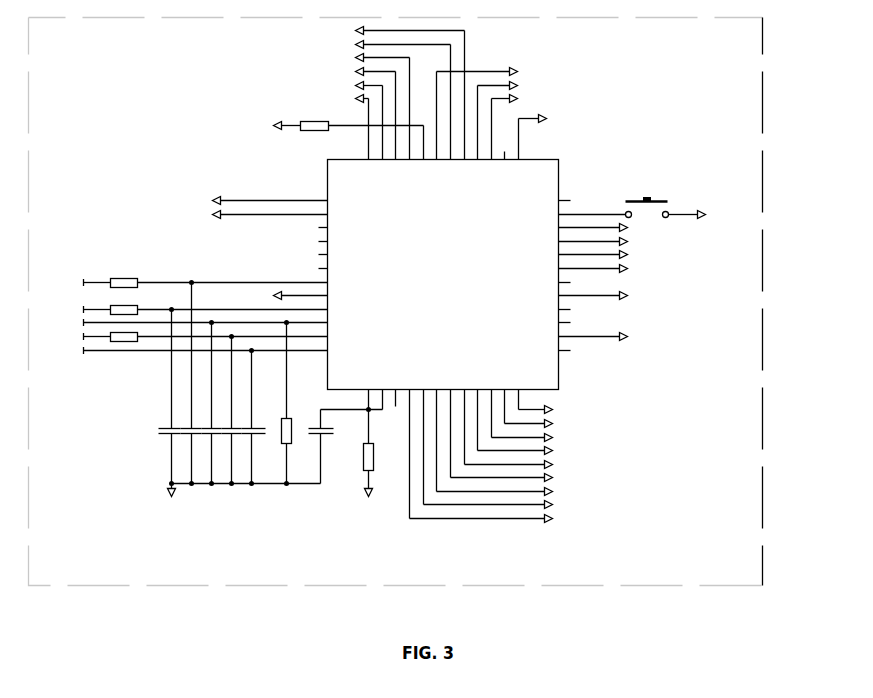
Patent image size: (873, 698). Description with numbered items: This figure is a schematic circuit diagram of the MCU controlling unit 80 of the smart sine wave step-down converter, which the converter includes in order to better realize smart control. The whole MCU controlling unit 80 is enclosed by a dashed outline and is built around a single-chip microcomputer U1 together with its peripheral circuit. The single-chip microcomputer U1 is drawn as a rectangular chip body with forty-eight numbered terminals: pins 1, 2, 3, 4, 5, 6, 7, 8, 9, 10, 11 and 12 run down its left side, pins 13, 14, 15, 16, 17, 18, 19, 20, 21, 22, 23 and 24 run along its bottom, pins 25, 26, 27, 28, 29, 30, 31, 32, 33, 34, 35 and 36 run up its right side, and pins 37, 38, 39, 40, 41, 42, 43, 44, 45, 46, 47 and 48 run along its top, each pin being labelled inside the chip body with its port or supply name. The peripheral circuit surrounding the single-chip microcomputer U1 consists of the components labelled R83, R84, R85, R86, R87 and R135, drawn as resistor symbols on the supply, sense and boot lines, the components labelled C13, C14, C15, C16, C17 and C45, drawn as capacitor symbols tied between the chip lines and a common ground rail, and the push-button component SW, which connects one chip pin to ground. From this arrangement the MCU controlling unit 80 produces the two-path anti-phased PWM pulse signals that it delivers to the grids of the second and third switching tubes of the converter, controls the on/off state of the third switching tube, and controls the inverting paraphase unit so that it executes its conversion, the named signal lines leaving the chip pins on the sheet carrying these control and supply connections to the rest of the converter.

The MCU controlling unit 80 is at (708, 140).
The single-chip microcomputer U1 is at (358, 274).
The resistor R83 is at (116, 278).
The resistor R84 is at (116, 305).
The resistor R85 is at (116, 332).
The resistor R86 is at (287, 403).
The resistor R87 is at (370, 453).
The resistor R135 is at (349, 119).
The capacitor C13 is at (170, 397).
The capacitor C14 is at (191, 383).
The capacitor C15 is at (212, 403).
The capacitor C16 is at (232, 410).
The capacitor C17 is at (321, 443).
The capacitor C45 is at (254, 417).
The switch SW is at (639, 202).
The microcontroller pin 1 (VDD) 1 is at (270, 197).
The microcontroller pin 2 (PC13) 2 is at (270, 211).
The microcontroller pin 3 is at (319, 222).
The microcontroller pin 4 is at (319, 236).
The microcontroller pin 5 is at (319, 249).
The microcontroller pin 6 is at (319, 263).
The microcontroller pin 7 (NRST) 7 is at (206, 277).
The microcontroller pin 8 (VSSA) 8 is at (301, 292).
The microcontroller pin 9 (VDDA) 9 is at (206, 304).
The microcontroller pin 10 (PA0) 10 is at (206, 317).
The microcontroller pin 11 (PA1) 11 is at (206, 331).
The microcontroller pin 12 (PA2) 12 is at (206, 345).
The microcontroller pin 13 is at (362, 401).
The microcontroller pin 14 is at (376, 401).
The microcontroller pin 15 is at (389, 401).
The microcontroller pin 16 is at (474, 456).
The microcontroller pin 17 is at (481, 449).
The microcontroller pin 18 is at (488, 443).
The microcontroller pin 19 is at (495, 436).
The microcontroller pin 20 is at (502, 429).
The microcontroller pin 21 is at (508, 422).
The microcontroller pin 22 is at (515, 416).
The microcontroller pin 23 (VSS) 23 is at (522, 409).
The microcontroller pin 24 (VDD) 24 is at (529, 402).
The microcontroller pin 25 is at (572, 345).
The microcontroller pin 26 is at (593, 333).
The microcontroller pin 27 is at (572, 317).
The microcontroller pin 28 is at (572, 304).
The microcontroller pin 29 is at (593, 292).
The microcontroller pin 30 is at (572, 277).
The microcontroller pin 31 is at (593, 265).
The microcontroller pin 32 is at (593, 251).
The microcontroller pin 33 is at (593, 238).
The microcontroller pin 34 is at (593, 224).
The microcontroller pin 35 is at (592, 209).
The microcontroller pin 36 is at (572, 195).
The microcontroller pin 37 is at (512, 139).
The microcontroller pin 38 is at (498, 147).
The microcontroller pin 39 is at (485, 129).
The microcontroller pin 40 is at (471, 123).
The microcontroller pin 41 is at (458, 95).
The microcontroller pin 42 is at (444, 102).
The microcontroller pin 43 is at (430, 116).
The microcontroller pin 44 is at (417, 143).
The microcontroller pin 45 is at (403, 109).
The microcontroller pin 46 is at (389, 116).
The microcontroller pin 47 is at (376, 123).
The microcontroller pin 48 is at (362, 129).